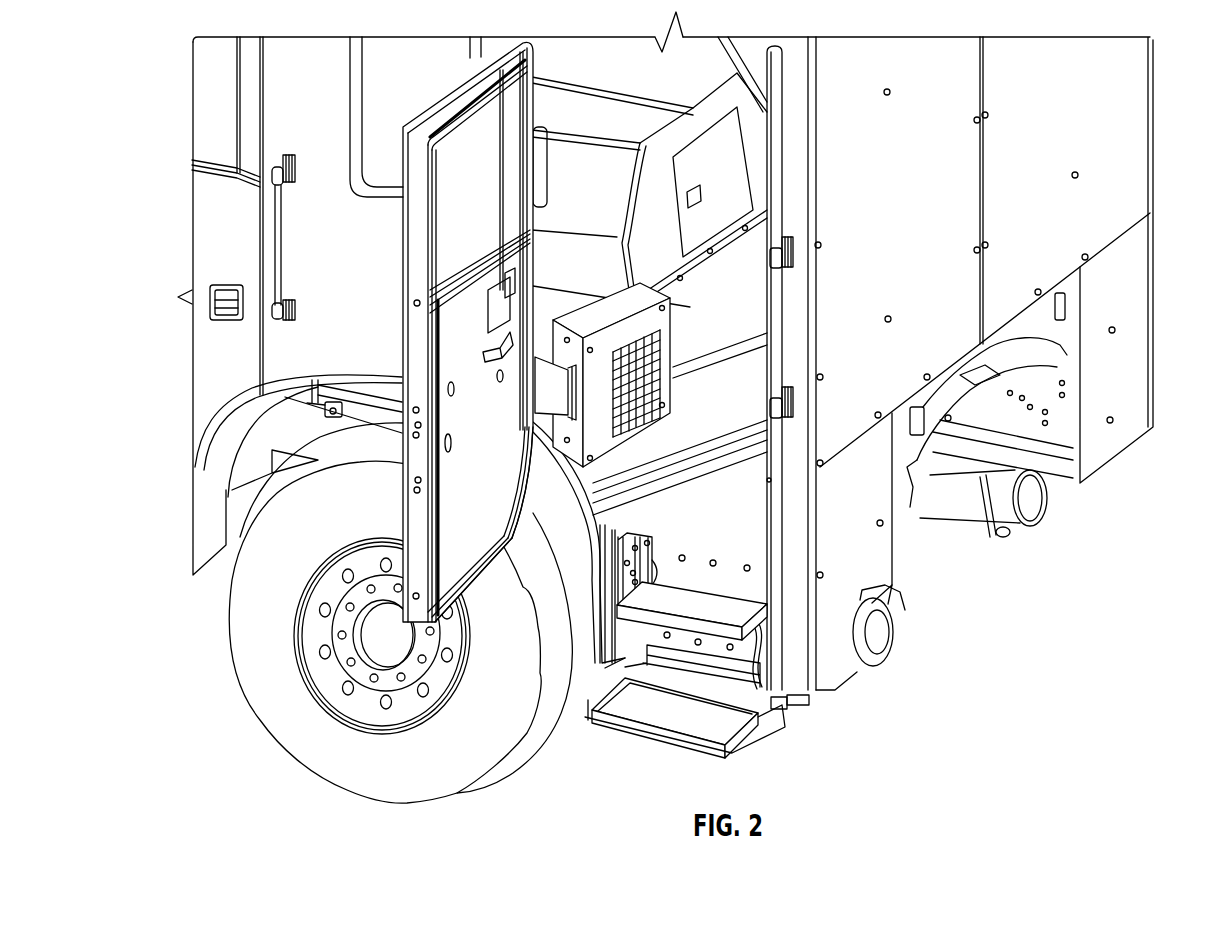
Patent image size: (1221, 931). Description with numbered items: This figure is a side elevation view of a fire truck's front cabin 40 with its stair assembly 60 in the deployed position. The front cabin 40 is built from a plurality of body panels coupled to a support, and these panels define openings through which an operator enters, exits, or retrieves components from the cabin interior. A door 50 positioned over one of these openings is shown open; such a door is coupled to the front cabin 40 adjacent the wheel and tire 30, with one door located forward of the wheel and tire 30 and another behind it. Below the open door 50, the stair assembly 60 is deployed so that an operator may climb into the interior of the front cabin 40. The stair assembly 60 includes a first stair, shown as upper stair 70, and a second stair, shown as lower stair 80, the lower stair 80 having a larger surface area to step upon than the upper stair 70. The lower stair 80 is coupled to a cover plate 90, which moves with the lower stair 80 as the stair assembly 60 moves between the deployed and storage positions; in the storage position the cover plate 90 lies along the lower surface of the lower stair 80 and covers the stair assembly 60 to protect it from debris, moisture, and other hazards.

The wheel and tire 30 is at (247, 637).
The front cabin 40 is at (1133, 127).
The door 50 is at (205, 362).
The stair assembly 60 is at (702, 639).
The upper stair 70 is at (733, 613).
The lower stair 80 is at (692, 708).
The cover plate 90 is at (758, 733).